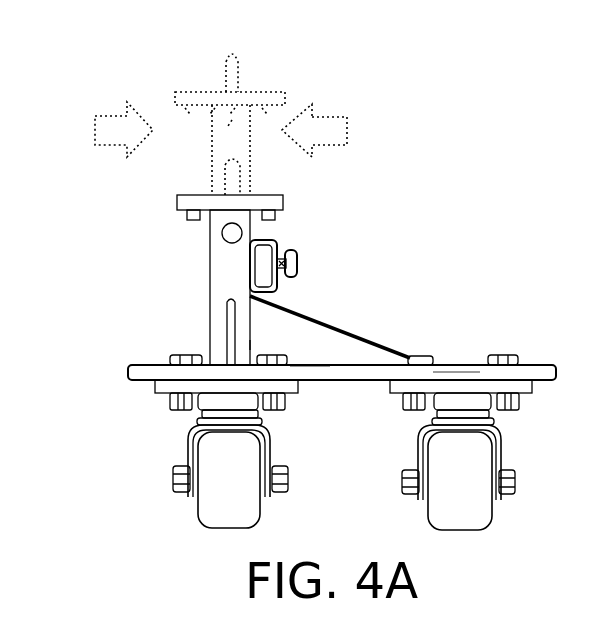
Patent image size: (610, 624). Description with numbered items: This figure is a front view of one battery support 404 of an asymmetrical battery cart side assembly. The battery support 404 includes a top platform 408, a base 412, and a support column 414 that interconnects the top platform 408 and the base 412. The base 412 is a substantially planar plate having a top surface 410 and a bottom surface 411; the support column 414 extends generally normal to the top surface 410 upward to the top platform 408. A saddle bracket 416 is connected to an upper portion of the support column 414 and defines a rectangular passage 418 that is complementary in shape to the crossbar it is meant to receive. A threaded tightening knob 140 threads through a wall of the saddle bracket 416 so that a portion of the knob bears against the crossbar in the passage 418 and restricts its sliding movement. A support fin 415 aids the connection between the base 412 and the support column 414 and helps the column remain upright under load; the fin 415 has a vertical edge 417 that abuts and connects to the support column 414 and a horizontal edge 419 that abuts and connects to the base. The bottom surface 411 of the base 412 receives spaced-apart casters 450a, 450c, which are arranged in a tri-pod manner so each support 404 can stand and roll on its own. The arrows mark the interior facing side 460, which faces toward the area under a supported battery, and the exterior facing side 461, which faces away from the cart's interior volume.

The battery support 404 is at (386, 165).
The top platform 408 is at (203, 195).
The top surface 410 is at (540, 367).
The bottom surface 411 is at (540, 383).
The base 412 is at (453, 372).
The support column 414 is at (192, 270).
The support fin 415 is at (228, 330).
The saddle bracket 416 is at (270, 240).
The vertical edge 417 is at (252, 345).
The passage 418 is at (255, 263).
The horizontal edge 419 is at (312, 368).
The tightening knob 140 is at (296, 265).
The caster 450a is at (207, 468).
The caster 450c is at (443, 493).
The interior facing side 460 is at (124, 129).
The exterior facing side 461 is at (292, 117).